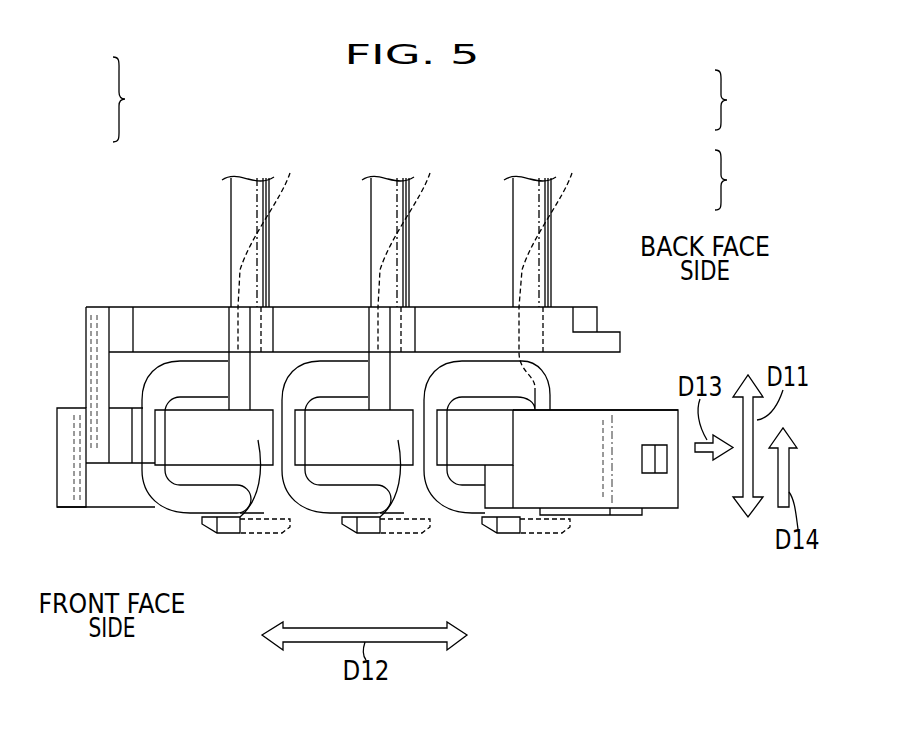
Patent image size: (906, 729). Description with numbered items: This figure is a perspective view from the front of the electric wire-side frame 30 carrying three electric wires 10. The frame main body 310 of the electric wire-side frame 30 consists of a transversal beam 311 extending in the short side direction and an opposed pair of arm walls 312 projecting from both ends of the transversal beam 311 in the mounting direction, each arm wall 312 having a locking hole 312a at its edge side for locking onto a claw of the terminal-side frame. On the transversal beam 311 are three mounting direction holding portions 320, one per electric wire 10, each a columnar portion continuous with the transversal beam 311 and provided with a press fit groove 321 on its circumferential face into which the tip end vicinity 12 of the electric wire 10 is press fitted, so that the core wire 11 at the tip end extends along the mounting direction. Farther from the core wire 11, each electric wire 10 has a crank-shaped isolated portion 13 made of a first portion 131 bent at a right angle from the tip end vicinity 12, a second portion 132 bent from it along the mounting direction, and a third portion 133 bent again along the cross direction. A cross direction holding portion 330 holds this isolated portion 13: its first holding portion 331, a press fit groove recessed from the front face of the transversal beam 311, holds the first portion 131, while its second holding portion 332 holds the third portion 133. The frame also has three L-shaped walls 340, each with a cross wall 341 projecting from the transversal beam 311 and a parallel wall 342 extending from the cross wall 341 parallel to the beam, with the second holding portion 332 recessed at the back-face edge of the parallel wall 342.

The electric wire 10 is at (252, 177).
The core wire 11 is at (625, 516).
The tip end vicinity 12 is at (258, 520).
The isolated portion 13 is at (135, 99).
The first portion 131 is at (130, 490).
The second portion 132 is at (213, 380).
The third portion 133 is at (265, 292).
The electric wire-side frame 30 is at (42, 443).
The frame main body 310 is at (67, 408).
The transversal beam 311 is at (560, 411).
The arm wall 312 is at (57, 485).
The locking hole 312a is at (645, 447).
The mounting direction holding portion 320 is at (276, 523).
The press fit groove 321 is at (227, 533).
The cross direction holding portion 330 is at (457, 291).
The first holding portion 331 is at (157, 440).
The second holding portion 332 is at (476, 243).
The L-shaped wall 340 is at (744, 180).
The cross wall 341 is at (131, 375).
The parallel wall 342 is at (195, 307).